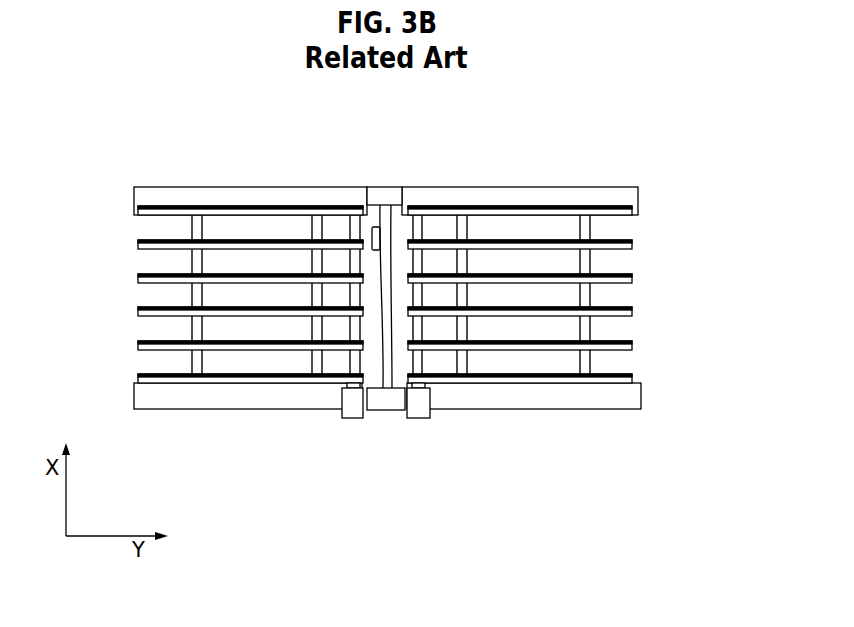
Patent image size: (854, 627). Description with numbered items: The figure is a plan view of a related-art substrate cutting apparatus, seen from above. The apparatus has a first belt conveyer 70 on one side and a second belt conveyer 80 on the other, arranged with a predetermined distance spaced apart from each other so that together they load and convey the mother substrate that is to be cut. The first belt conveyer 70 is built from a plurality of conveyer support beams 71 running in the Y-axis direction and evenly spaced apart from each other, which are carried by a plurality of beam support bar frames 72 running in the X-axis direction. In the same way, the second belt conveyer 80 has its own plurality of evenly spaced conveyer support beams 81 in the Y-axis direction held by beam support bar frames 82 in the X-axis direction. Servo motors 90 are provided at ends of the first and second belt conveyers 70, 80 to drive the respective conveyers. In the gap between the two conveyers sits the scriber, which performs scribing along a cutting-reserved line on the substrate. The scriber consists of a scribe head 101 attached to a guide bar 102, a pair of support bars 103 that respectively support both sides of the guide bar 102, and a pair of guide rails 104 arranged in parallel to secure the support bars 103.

The first belt conveyer 70 is at (211, 300).
The conveyer support beams 71 is at (176, 353).
The beam support bar frames 72 is at (198, 223).
The second belt conveyer 80 is at (560, 307).
The conveyer support beams 81 is at (525, 343).
The beam support bar frames 82 is at (465, 228).
The servo motors 90 is at (352, 407).
The scribe head 101 is at (373, 230).
The guide bar 102 is at (391, 395).
The support bars 103 is at (386, 195).
The guide rails 104 is at (582, 400).